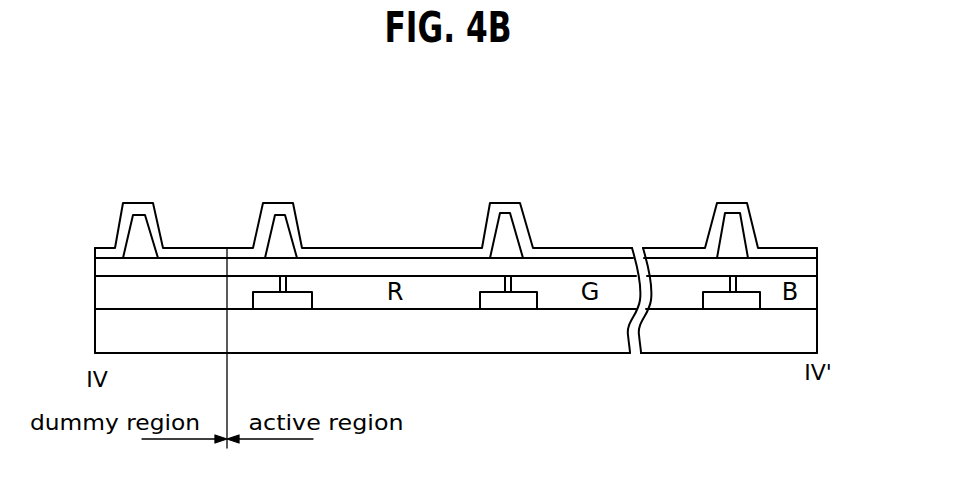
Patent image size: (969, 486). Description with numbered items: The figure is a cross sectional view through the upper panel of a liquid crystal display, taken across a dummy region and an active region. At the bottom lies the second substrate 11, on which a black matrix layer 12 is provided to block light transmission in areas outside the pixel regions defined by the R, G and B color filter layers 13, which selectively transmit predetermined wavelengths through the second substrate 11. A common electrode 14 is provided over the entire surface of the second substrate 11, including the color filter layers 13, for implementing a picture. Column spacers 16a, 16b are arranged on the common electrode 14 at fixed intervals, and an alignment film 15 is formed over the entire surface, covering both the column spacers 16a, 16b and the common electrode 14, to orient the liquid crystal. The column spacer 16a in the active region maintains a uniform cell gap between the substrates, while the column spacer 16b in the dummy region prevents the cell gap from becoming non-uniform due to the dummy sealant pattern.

The second substrate 11 is at (812, 328).
The black matrix layer 12 is at (279, 302).
The color filter layers 13 is at (432, 297).
The common electrode 14 is at (398, 263).
The alignment film 15 is at (602, 252).
The column spacer 16a is at (509, 241).
The column spacer 16b is at (145, 243).